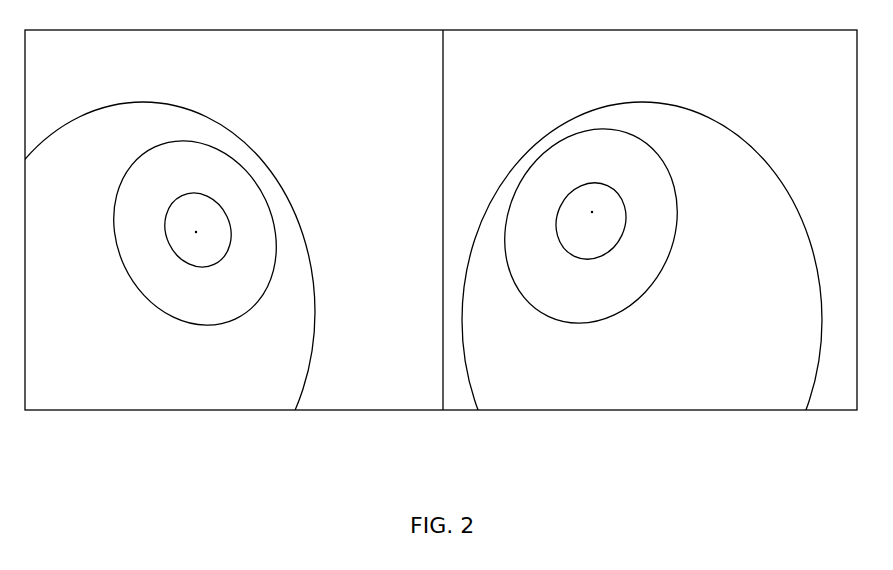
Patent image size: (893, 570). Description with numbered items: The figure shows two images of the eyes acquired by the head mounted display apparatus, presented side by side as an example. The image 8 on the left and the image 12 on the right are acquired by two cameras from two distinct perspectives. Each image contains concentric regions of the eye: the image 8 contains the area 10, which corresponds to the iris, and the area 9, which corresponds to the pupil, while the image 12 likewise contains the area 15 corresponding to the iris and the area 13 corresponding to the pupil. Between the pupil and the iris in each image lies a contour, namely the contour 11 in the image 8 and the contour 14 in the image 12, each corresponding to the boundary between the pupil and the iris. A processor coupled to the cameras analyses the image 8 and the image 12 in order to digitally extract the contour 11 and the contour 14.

The image 8 is at (353, 122).
The area 9 is at (195, 233).
The area 10 is at (238, 288).
The contour 11 is at (232, 242).
The image 12 is at (795, 105).
The area 13 is at (592, 212).
The contour 14 is at (627, 219).
The area 15 is at (643, 248).